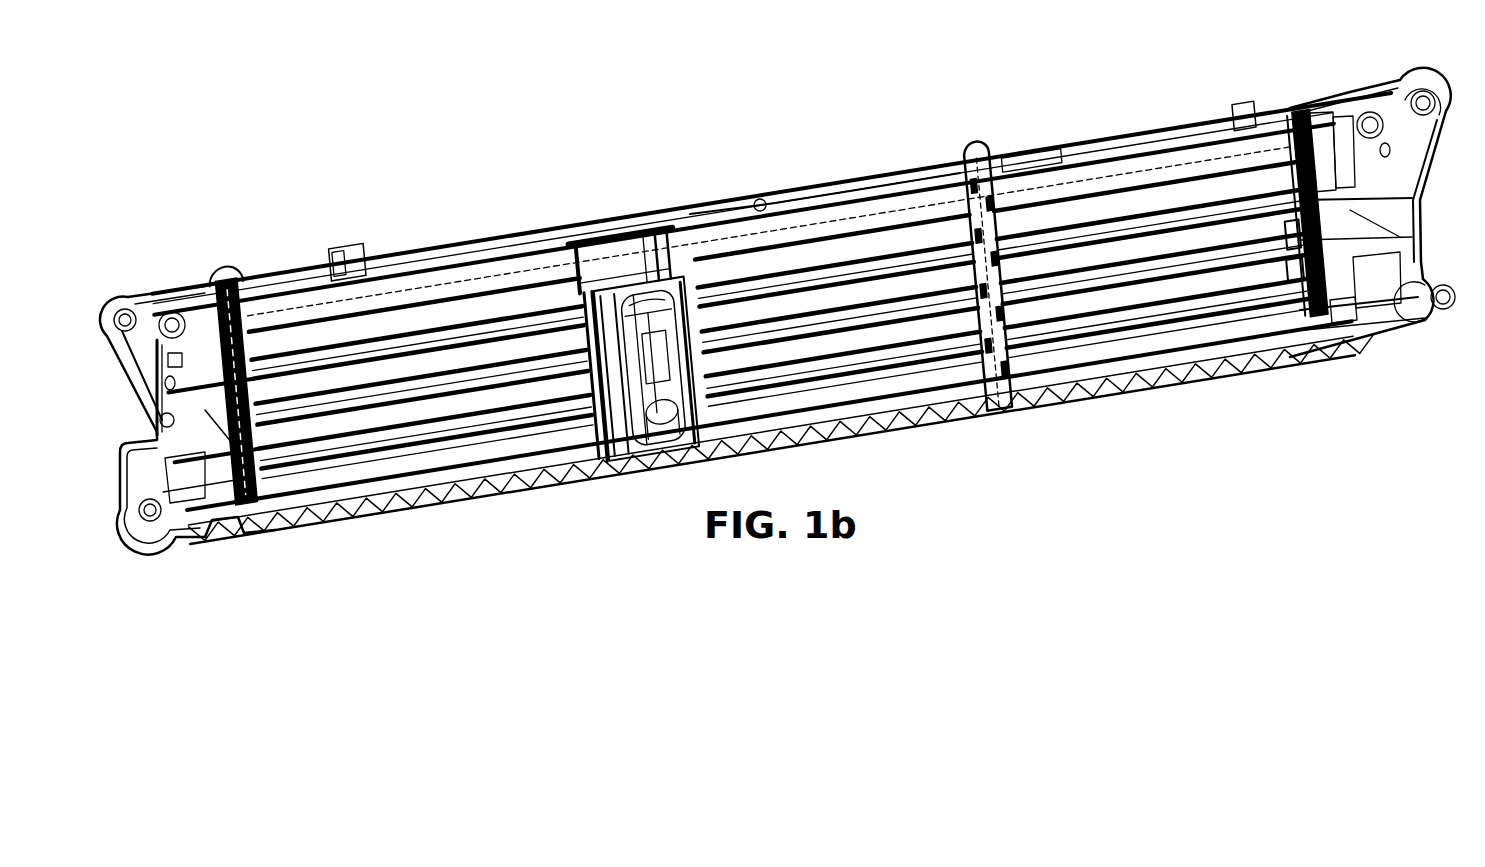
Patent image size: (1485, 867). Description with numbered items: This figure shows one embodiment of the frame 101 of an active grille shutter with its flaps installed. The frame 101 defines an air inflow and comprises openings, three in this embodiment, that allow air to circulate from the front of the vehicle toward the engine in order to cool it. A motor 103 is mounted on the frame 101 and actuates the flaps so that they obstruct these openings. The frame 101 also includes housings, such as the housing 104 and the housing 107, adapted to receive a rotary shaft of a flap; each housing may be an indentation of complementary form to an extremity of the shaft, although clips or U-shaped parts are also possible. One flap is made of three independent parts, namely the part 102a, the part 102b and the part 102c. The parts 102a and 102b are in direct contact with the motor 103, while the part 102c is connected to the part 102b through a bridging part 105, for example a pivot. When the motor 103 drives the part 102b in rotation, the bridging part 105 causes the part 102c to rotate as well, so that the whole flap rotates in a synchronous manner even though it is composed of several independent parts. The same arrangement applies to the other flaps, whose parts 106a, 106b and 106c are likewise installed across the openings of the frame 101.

The frame 101 is at (820, 179).
The part of the flap 102a is at (290, 310).
The part of the flap 102b is at (903, 207).
The part of the flap 102c is at (1198, 160).
The motor 103 is at (602, 228).
The housing 104 is at (1302, 122).
The bridging part 105 is at (987, 155).
The flap 106a is at (347, 357).
The flap 106b is at (908, 265).
The flap 106c is at (1107, 233).
The housing 107 is at (1287, 235).